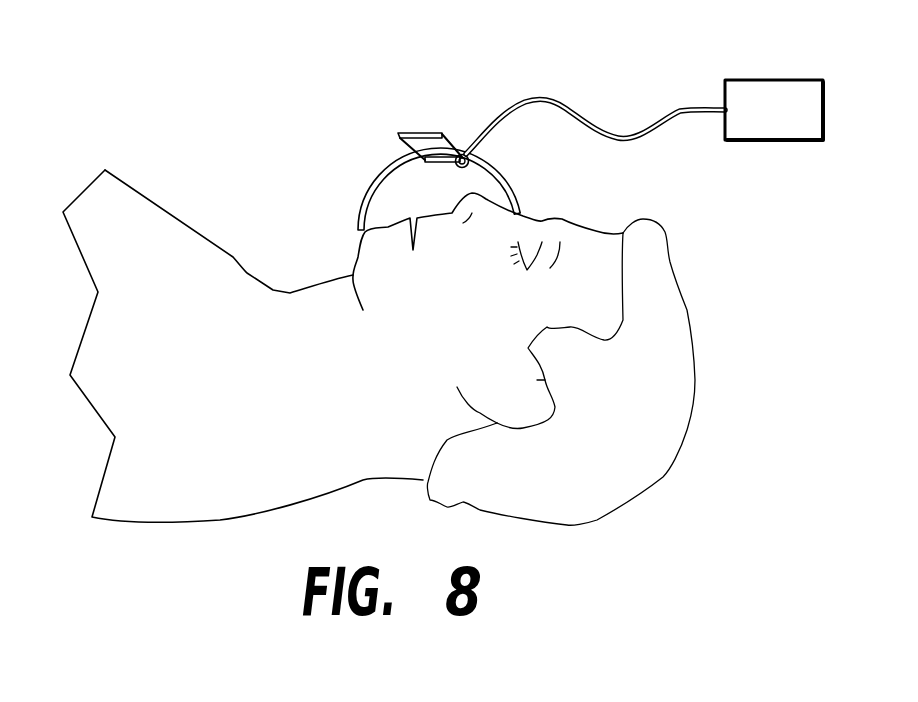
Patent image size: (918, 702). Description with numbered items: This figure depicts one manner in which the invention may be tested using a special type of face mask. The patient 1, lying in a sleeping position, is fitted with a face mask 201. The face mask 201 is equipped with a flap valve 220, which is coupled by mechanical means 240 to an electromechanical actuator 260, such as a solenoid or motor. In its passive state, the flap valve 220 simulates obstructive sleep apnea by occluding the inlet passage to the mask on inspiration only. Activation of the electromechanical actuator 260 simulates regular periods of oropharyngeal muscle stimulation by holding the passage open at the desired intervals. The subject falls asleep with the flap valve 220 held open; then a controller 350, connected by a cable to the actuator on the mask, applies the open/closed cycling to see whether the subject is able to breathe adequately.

The patient 1 is at (222, 385).
The face mask 201 is at (440, 208).
The flap valve 220 is at (402, 143).
The mechanical means 240 is at (418, 131).
The electromechanical actuator 260 is at (465, 149).
The controller 350 is at (803, 124).